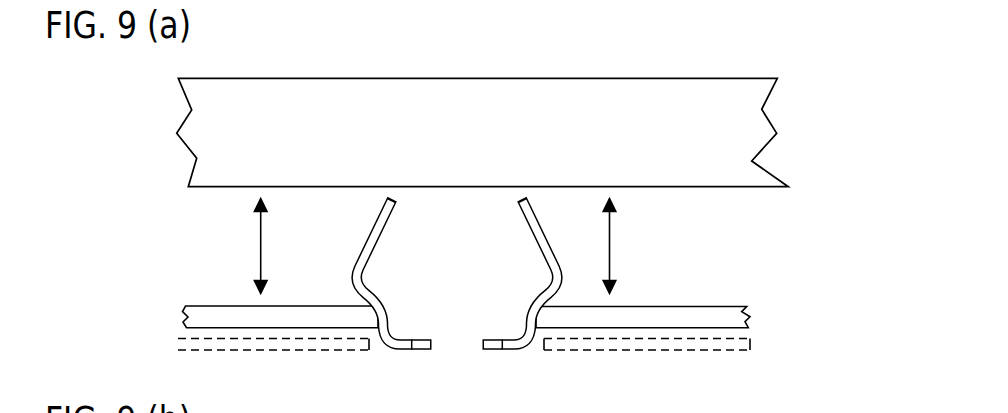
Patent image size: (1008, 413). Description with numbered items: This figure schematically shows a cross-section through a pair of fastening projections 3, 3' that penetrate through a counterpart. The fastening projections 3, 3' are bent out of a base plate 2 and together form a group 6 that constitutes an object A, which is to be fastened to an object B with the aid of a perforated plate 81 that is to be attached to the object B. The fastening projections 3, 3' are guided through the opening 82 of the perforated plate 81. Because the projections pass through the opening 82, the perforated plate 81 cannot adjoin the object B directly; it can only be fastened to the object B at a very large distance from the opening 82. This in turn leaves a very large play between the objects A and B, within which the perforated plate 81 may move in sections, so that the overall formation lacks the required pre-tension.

The object B is at (483, 132).
The fastening projection 3 is at (393, 271).
The fastening projection 3' is at (531, 274).
The group of fastening projections 6 is at (538, 228).
The perforated plate 81 is at (677, 322).
The opening of the perforated plate 82 is at (488, 305).
The base plate 2 is at (285, 350).
The object A is at (363, 351).